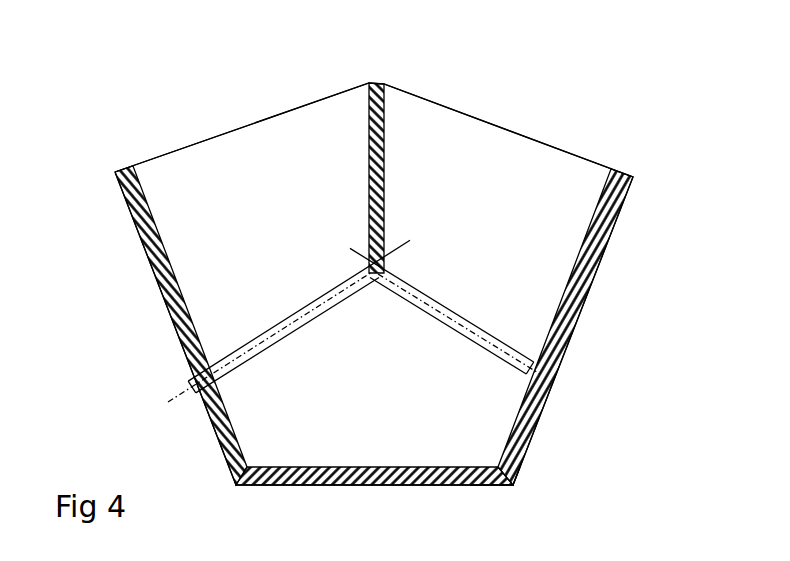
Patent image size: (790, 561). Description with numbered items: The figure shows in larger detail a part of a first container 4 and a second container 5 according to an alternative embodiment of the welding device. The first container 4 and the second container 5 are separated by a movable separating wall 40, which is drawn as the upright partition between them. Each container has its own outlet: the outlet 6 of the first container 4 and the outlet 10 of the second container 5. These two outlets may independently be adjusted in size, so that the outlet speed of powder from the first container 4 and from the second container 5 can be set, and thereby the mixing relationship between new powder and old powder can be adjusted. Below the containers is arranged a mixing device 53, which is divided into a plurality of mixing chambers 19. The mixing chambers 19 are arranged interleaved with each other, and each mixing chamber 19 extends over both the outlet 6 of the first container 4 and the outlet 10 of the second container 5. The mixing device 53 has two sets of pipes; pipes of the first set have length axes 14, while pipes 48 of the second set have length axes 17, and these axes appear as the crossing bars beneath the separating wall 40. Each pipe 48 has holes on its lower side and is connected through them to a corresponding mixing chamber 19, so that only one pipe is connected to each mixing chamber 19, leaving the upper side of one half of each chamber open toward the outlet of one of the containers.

The first container 4 is at (304, 171).
The second container 5 is at (424, 174).
The outlet of the first container 6 is at (220, 337).
The outlet of the second container 10 is at (480, 302).
The length axis 14 is at (162, 418).
The length axis 17 is at (577, 406).
The mixing chamber 19 is at (460, 418).
The movable separating wall 40 is at (383, 118).
The pipe 48 is at (540, 350).
The mixing device 53 is at (540, 487).